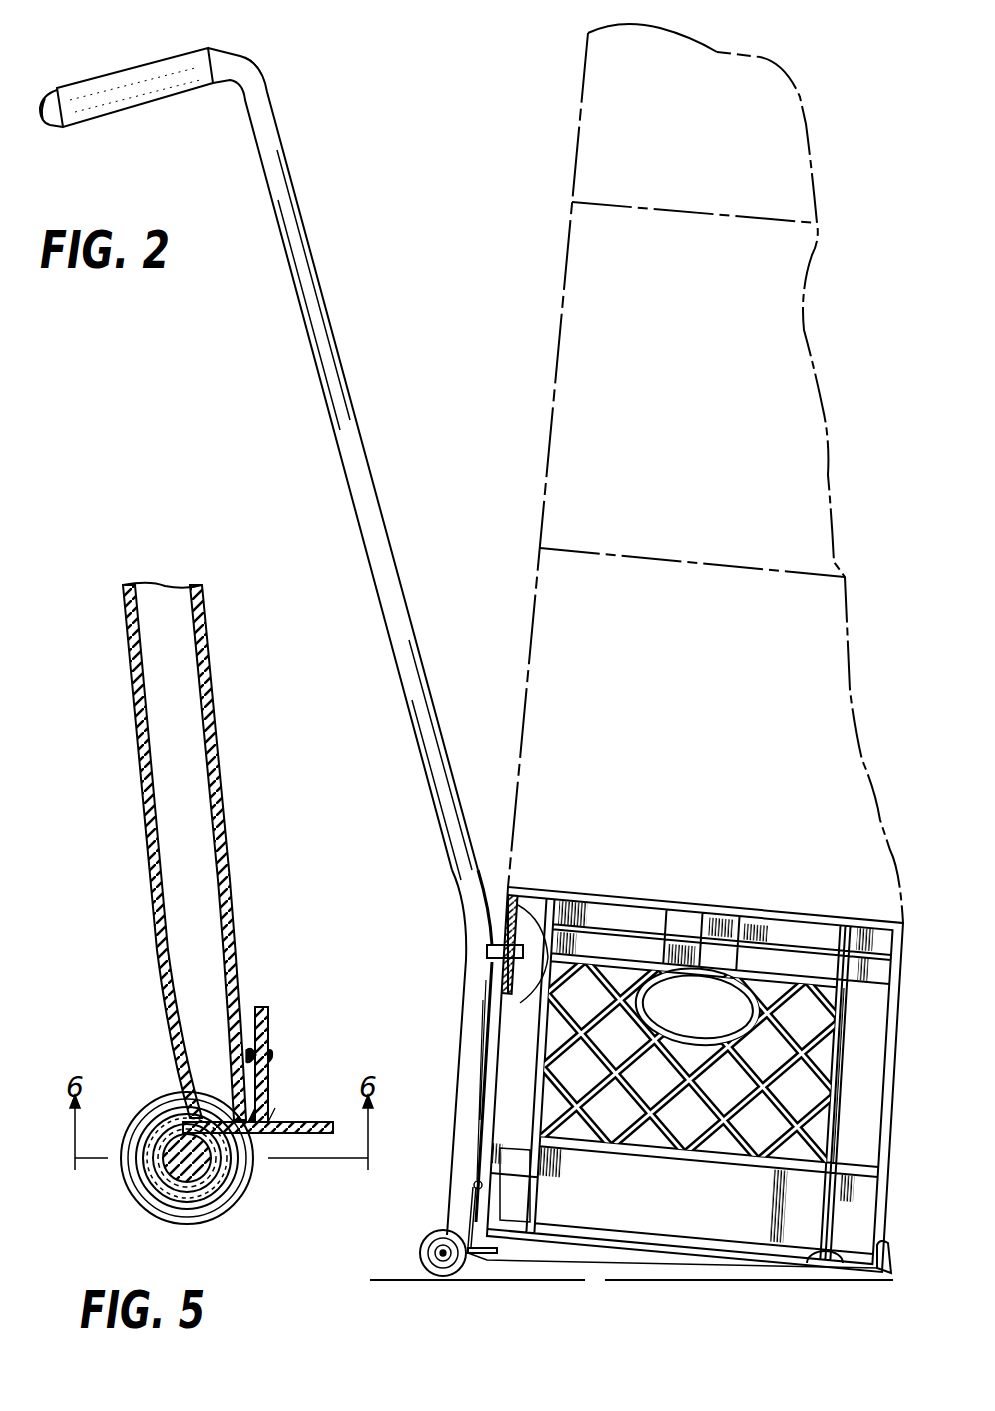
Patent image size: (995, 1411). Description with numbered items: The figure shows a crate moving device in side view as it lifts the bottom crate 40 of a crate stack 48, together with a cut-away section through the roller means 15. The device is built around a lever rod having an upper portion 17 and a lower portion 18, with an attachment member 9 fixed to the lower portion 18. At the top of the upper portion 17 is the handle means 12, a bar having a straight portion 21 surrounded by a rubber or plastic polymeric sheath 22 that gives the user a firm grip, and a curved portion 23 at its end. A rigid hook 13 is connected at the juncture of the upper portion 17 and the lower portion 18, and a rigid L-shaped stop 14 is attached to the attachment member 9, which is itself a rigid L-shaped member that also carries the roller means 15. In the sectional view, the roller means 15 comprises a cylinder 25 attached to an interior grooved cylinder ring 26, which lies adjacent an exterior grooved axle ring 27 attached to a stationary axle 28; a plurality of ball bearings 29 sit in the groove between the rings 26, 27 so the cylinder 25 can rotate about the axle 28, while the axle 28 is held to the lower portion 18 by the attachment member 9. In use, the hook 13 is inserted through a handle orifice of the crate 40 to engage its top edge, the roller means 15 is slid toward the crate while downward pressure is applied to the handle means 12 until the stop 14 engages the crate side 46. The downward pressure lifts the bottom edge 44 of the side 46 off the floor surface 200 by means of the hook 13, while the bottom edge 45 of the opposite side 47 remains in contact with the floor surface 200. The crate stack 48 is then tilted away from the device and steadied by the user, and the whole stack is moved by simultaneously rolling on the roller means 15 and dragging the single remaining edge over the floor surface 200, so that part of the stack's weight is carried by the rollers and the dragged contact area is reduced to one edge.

In FIG. 2, the attachment member 9 is at (470, 1262).
In FIG. 5, the attachment member 9 is at (253, 1008).
In FIG. 2, the handle means 12 is at (124, 105).
In FIG. 2, the hook 13 is at (500, 942).
In FIG. 5, the stop 14 is at (272, 1060).
In FIG. 2, the roller means 15 is at (425, 1238).
In FIG. 5, the roller means 15 is at (178, 1121).
In FIG. 2, the upper portion 17 is at (385, 628).
In FIG. 2, the lower portion 18 is at (468, 1008).
In FIG. 5, the lower portion 18 is at (218, 760).
In FIG. 2, the straight portion 21 is at (215, 50).
In FIG. 2, the polymeric sheath 22 is at (106, 82).
In FIG. 2, the curved portion 23 is at (45, 122).
In FIG. 5, the cylinder 25 is at (128, 1195).
In FIG. 5, the interior grooved cylinder ring 26 is at (155, 1205).
In FIG. 5, the exterior grooved axle ring 27 is at (187, 1200).
In FIG. 5, the stationary axle 28 is at (205, 1198).
In FIG. 5, the ball bearings 29 is at (244, 1172).
In FIG. 2, the crate 40 is at (705, 1212).
In FIG. 2, the bottom edge 44 is at (510, 1270).
In FIG. 2, the bottom edge 45 is at (822, 1256).
In FIG. 2, the crate side 46 is at (540, 1185).
In FIG. 2, the crate side 47 is at (878, 1272).
In FIG. 2, the crate stack 48 is at (568, 260).
In FIG. 2, the floor surface 200 is at (590, 1283).